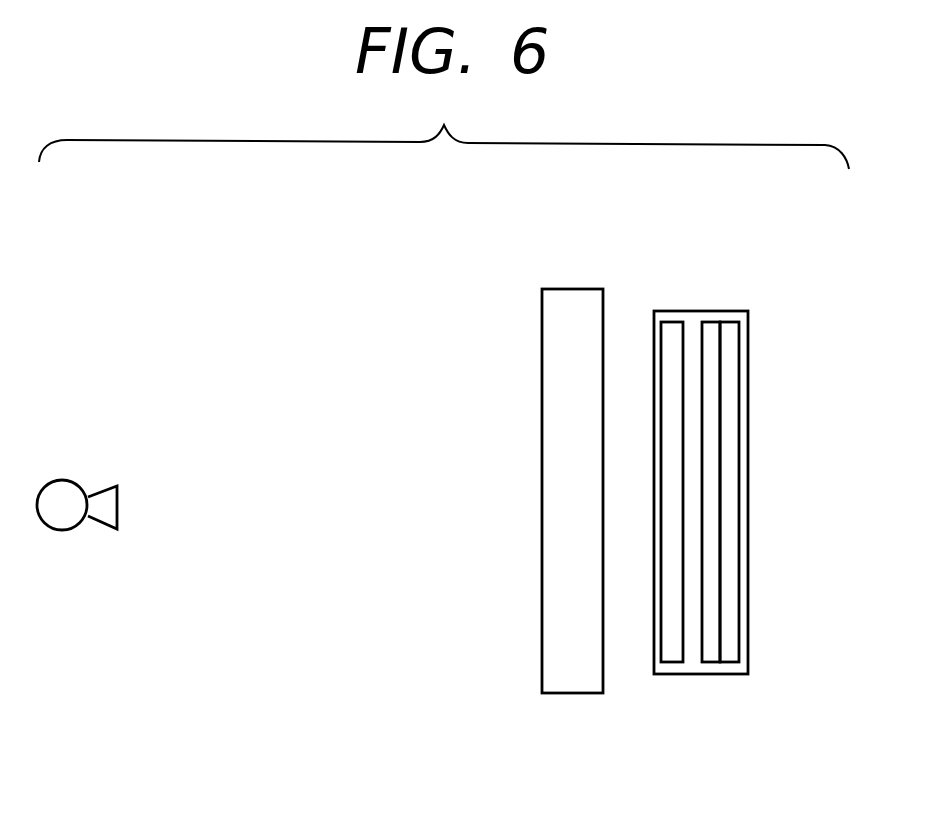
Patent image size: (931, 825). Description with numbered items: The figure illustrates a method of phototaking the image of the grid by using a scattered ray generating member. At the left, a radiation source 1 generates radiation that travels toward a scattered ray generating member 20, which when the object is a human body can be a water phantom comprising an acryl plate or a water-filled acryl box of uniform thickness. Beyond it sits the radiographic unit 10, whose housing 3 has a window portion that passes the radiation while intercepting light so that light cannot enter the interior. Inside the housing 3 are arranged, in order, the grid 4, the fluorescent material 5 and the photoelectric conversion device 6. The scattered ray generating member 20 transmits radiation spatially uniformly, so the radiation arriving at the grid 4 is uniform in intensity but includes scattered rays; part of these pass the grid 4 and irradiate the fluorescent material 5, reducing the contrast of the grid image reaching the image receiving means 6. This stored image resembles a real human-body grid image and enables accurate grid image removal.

The radiation source 1 is at (73, 480).
The scattered ray generating member 20 is at (507, 343).
The radiographic unit 10 is at (790, 535).
The housing 3 is at (750, 362).
The grid 4 is at (673, 322).
The fluorescent material 5 is at (712, 322).
The photoelectric conversion device 6 is at (737, 322).